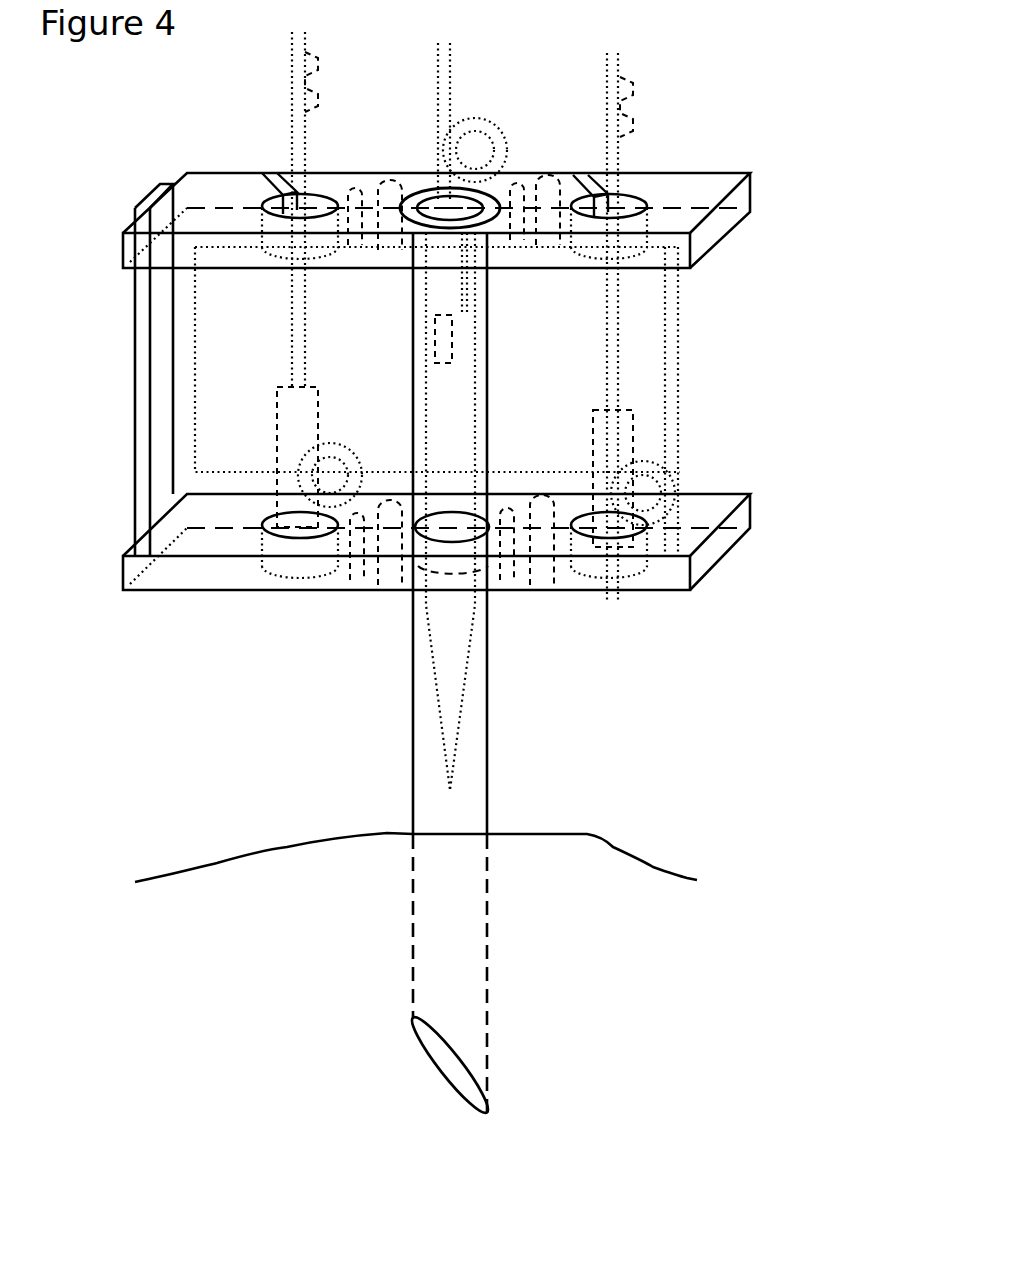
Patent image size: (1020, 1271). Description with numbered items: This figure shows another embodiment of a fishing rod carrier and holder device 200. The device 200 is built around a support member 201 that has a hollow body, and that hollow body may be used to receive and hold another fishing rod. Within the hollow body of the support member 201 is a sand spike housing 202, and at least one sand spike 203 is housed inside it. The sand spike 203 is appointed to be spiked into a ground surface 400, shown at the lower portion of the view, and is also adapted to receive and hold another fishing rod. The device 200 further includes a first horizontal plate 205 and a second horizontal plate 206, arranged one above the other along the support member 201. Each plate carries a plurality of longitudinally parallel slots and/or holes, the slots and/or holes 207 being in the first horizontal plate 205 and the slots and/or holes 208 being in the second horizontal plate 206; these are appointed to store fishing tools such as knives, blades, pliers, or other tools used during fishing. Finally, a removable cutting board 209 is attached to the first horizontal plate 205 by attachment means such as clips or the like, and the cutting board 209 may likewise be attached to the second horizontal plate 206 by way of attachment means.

The fishing rod carrier and holder device 200 is at (816, 112).
The support member 201 is at (487, 773).
The sand spike housing 202 is at (486, 222).
The sand spike 203 is at (450, 637).
The first horizontal plate 205 is at (735, 214).
The second horizontal plate 206 is at (716, 529).
The slots and/or holes 207 is at (373, 190).
The slots and/or holes 208 is at (388, 592).
The removable cutting board 209 is at (221, 423).
The ground surface 400 is at (343, 936).